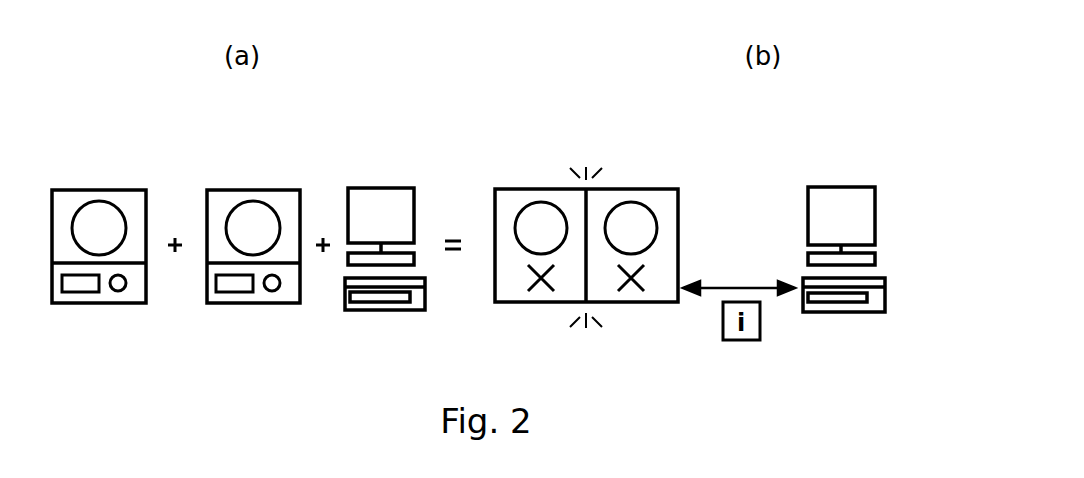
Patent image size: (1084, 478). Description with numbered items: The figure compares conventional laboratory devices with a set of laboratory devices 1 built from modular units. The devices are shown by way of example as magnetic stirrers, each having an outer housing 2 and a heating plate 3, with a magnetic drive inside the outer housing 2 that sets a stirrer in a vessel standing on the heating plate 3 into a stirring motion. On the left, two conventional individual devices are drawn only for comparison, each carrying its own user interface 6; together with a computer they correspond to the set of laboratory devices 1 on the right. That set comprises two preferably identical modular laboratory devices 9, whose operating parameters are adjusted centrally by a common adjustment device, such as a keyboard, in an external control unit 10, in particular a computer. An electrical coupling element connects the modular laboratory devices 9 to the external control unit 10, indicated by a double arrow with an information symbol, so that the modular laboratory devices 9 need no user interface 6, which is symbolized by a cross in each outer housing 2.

The set of laboratory devices 1 is at (497, 118).
The outer housing 2 is at (207, 200).
The heating plate 3 is at (92, 217).
The user interface 6 is at (102, 295).
The modular laboratory device 9 is at (512, 198).
The external control unit 10 is at (888, 200).